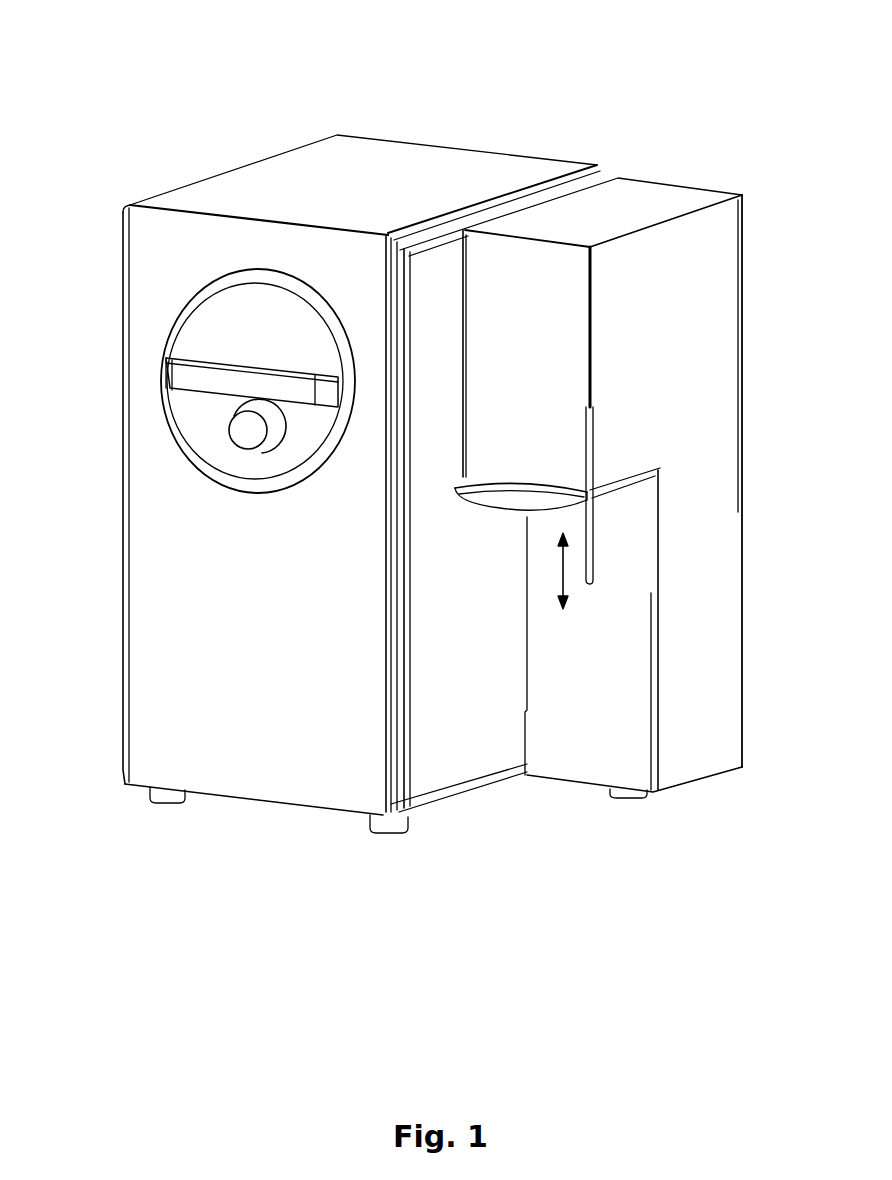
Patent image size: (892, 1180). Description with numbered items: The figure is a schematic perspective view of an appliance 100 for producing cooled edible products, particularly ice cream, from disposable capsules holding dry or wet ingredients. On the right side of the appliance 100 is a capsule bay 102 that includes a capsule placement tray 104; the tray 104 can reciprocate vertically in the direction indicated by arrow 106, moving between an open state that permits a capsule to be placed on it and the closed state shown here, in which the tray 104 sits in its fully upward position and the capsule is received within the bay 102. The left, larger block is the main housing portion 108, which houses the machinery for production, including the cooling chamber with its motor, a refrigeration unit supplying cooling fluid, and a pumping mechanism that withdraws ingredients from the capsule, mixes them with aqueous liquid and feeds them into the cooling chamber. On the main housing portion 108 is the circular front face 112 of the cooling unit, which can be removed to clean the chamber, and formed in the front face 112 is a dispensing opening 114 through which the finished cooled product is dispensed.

The appliance 100 is at (441, 423).
The capsule bay 102 is at (618, 488).
The capsule placement tray 104 is at (587, 503).
The arrow 106 is at (589, 578).
The main housing portion 108 is at (319, 484).
The front face 112 is at (188, 345).
The dispensing opening 114 is at (242, 428).